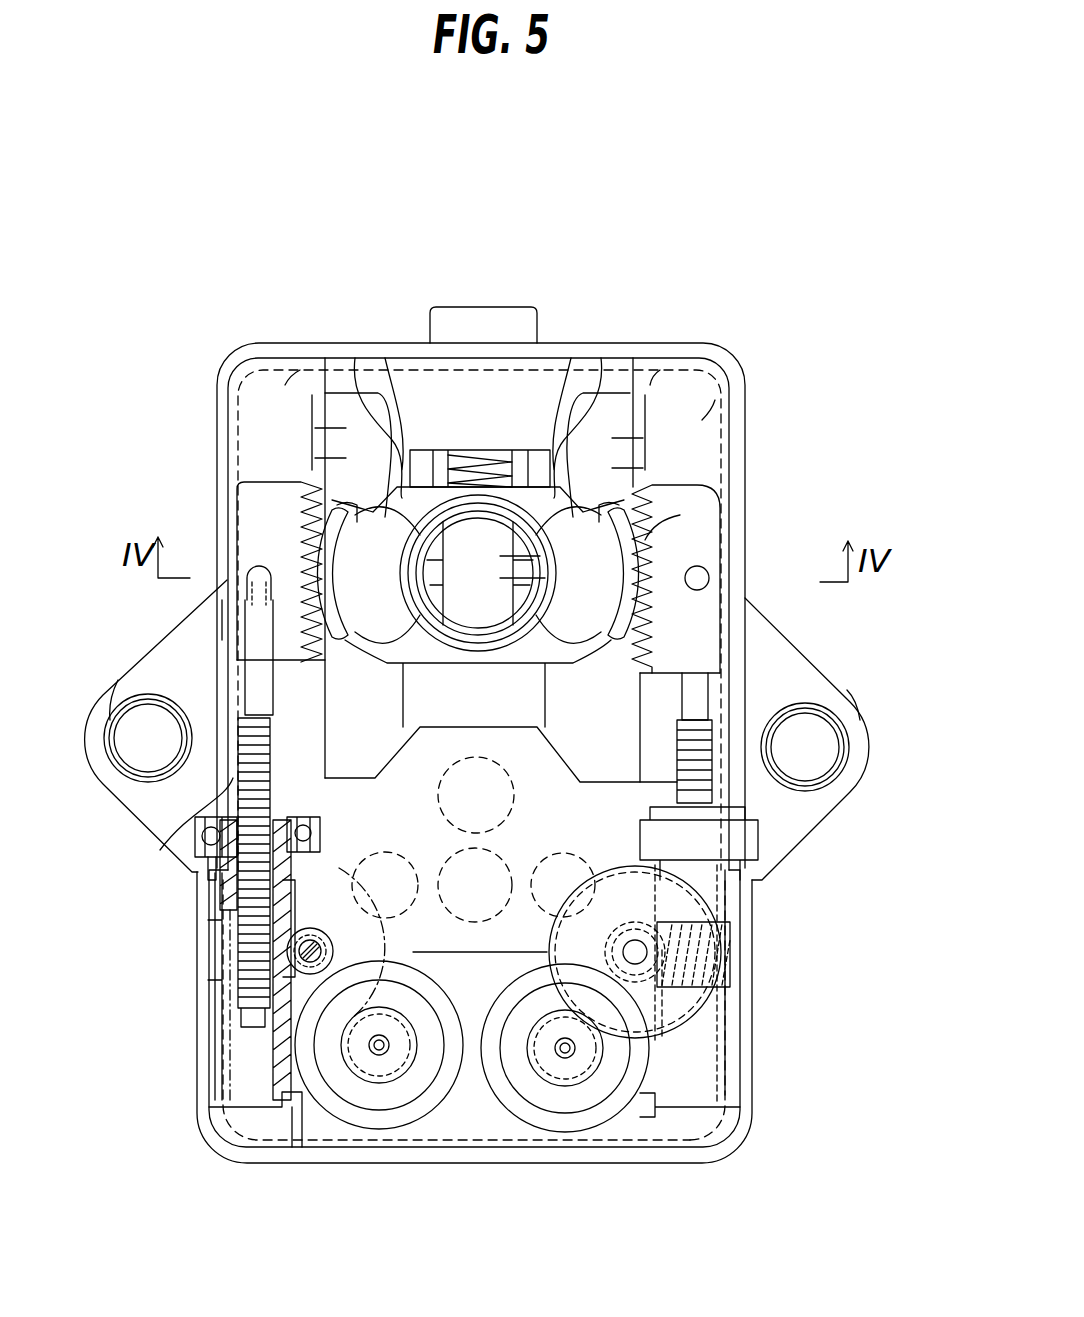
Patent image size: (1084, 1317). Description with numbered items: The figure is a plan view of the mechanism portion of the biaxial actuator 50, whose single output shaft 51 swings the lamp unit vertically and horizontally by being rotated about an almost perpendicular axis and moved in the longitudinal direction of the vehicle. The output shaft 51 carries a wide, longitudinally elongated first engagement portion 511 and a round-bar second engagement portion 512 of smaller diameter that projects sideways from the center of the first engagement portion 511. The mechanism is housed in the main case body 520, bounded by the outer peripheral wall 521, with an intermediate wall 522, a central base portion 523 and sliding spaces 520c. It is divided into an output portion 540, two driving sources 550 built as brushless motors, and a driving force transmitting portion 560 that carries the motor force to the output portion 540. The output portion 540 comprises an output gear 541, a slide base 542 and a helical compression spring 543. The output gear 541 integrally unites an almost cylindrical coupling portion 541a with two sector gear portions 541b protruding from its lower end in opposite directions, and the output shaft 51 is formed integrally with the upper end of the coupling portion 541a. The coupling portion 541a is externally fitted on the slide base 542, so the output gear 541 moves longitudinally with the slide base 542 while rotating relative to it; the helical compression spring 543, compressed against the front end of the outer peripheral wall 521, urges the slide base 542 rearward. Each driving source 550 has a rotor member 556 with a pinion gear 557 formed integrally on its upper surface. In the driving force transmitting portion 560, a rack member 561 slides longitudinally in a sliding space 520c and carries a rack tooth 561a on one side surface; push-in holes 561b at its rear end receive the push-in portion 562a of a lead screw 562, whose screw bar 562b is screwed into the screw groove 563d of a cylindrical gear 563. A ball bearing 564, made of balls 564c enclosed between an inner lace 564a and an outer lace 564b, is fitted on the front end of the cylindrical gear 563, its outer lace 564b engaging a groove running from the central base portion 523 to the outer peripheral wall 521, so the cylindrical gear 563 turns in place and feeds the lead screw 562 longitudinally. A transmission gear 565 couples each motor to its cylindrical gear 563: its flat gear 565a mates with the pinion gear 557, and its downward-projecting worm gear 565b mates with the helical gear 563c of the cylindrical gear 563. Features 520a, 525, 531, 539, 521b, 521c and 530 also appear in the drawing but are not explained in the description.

The biaxial actuator 50 is at (265, 239).
The output shaft 51 is at (622, 580).
The first engagement portion 511 is at (622, 555).
The second engagement portion 512 is at (435, 592).
The main case body 520 is at (705, 360).
The cover inner wall 520a is at (705, 425).
The sliding spaces 520c is at (290, 390).
The outer peripheral wall 521 is at (727, 1072).
The mounting lug 521b is at (162, 668).
The mounting hole 521c is at (148, 702).
The intermediate wall 522 is at (320, 430).
The central base portion 523 is at (550, 776).
The guide rib 525 is at (318, 428).
The seal line 530 is at (745, 1140).
The boss 531 is at (470, 310).
The screw holes 539 is at (525, 790).
The output portion 540 is at (591, 457).
The output gear 541 is at (410, 522).
The coupling portion 541a is at (392, 657).
The sector gear portions 541b is at (295, 525).
The slide base 542 is at (395, 395).
The helical compression spring 543 is at (478, 455).
The driving source 550 is at (365, 1085).
The rotor member 556 is at (405, 1118).
The pinion gear 557 is at (359, 1068).
The driving force transmitting portion 560 is at (198, 644).
The rack member 561 is at (292, 487).
The rack tooth 561a is at (648, 540).
The push-in holes 561b is at (222, 612).
The lead screw 562 is at (215, 835).
The push-in portion 562a is at (232, 590).
The screw bar 562b is at (700, 740).
The cylindrical gear 563 is at (255, 1000).
The helical gear 563c is at (275, 970).
The screw groove 563d is at (265, 935).
The ball bearing 564 is at (692, 900).
The inner lace 564a is at (330, 836).
The outer lace 564b is at (245, 905).
The balls 564c is at (232, 860).
The transmission gear 565 is at (272, 1040).
The flat gear 565a is at (680, 1030).
The worm gear 565b is at (325, 940).